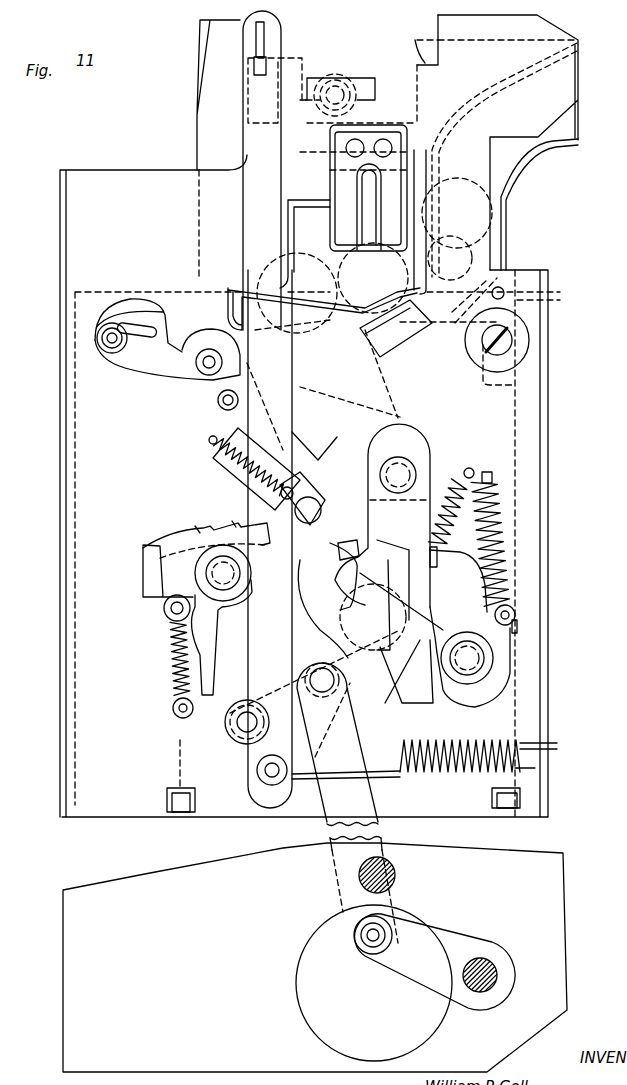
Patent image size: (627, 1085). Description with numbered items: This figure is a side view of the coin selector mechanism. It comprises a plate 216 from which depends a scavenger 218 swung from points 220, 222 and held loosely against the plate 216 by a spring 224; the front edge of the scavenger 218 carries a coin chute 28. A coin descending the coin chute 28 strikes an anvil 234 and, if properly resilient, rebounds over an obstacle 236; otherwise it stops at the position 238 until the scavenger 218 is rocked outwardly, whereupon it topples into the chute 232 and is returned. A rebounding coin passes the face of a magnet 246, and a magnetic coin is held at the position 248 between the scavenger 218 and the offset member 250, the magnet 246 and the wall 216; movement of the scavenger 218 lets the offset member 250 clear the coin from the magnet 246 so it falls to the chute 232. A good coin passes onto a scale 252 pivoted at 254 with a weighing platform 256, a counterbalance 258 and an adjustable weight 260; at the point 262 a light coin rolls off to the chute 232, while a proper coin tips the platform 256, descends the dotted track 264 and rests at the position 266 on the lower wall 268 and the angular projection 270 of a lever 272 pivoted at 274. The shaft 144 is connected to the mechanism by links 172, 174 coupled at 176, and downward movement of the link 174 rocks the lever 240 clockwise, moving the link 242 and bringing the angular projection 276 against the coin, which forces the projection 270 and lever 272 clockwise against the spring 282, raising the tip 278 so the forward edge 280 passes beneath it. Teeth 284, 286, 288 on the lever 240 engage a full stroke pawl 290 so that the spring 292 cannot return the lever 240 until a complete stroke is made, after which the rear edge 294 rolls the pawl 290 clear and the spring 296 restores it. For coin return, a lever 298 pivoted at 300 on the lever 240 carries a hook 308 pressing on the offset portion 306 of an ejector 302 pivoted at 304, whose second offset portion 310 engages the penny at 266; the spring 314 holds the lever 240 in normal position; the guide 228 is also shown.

The plate 216 is at (85, 180).
The scavenger 218 is at (567, 126).
The swing point 220 is at (417, 40).
The swing point 222 is at (281, 56).
The spring 224 is at (333, 77).
The guide 228 is at (473, 217).
The coin chute 28 is at (548, 147).
The chute 232 is at (207, 815).
The anvil 234 is at (498, 336).
The obstacle 236 is at (403, 310).
The coin stop position 238 is at (493, 265).
The lever 240 is at (225, 736).
The link 242 is at (250, 210).
The magnet 246 is at (340, 157).
The magnetic coin stop position 248 is at (330, 294).
The offset member 250 is at (230, 300).
The scale 252 is at (153, 368).
The scale pivot 254 is at (208, 369).
The weighing platform 256 is at (333, 337).
The counterbalance 258 is at (112, 310).
The adjustable weight 260 is at (112, 352).
The coin point on scale 262 is at (290, 270).
The track 264 is at (417, 348).
The coin position in track 266 is at (292, 650).
The lower wall 268 is at (316, 772).
The angular projection 270 is at (449, 610).
The lever 272 is at (510, 658).
The lever pivot 274 is at (484, 667).
The angular projection 276 is at (252, 586).
The tip 278 is at (243, 483).
The forward edge 280 is at (247, 500).
The spring 282 is at (510, 556).
The tooth 284 is at (148, 533).
The tooth 286 is at (197, 527).
The tooth 288 is at (233, 522).
The full stroke pawl 290 is at (302, 487).
The spring 292 is at (513, 771).
The rear edge 294 is at (143, 556).
The spring 296 is at (215, 453).
The lever 298 is at (197, 575).
The pivot 300 is at (230, 592).
The ejector 302 is at (410, 438).
The ejector pivot 304 is at (412, 467).
The offset portion 306 is at (367, 547).
The hook 308 is at (340, 547).
The second offset portion 310 is at (390, 700).
The spring 314 is at (172, 673).
The link 174 is at (340, 874).
The coupling point 176 is at (377, 933).
The link 172 is at (427, 943).
The shaft 144 is at (484, 972).